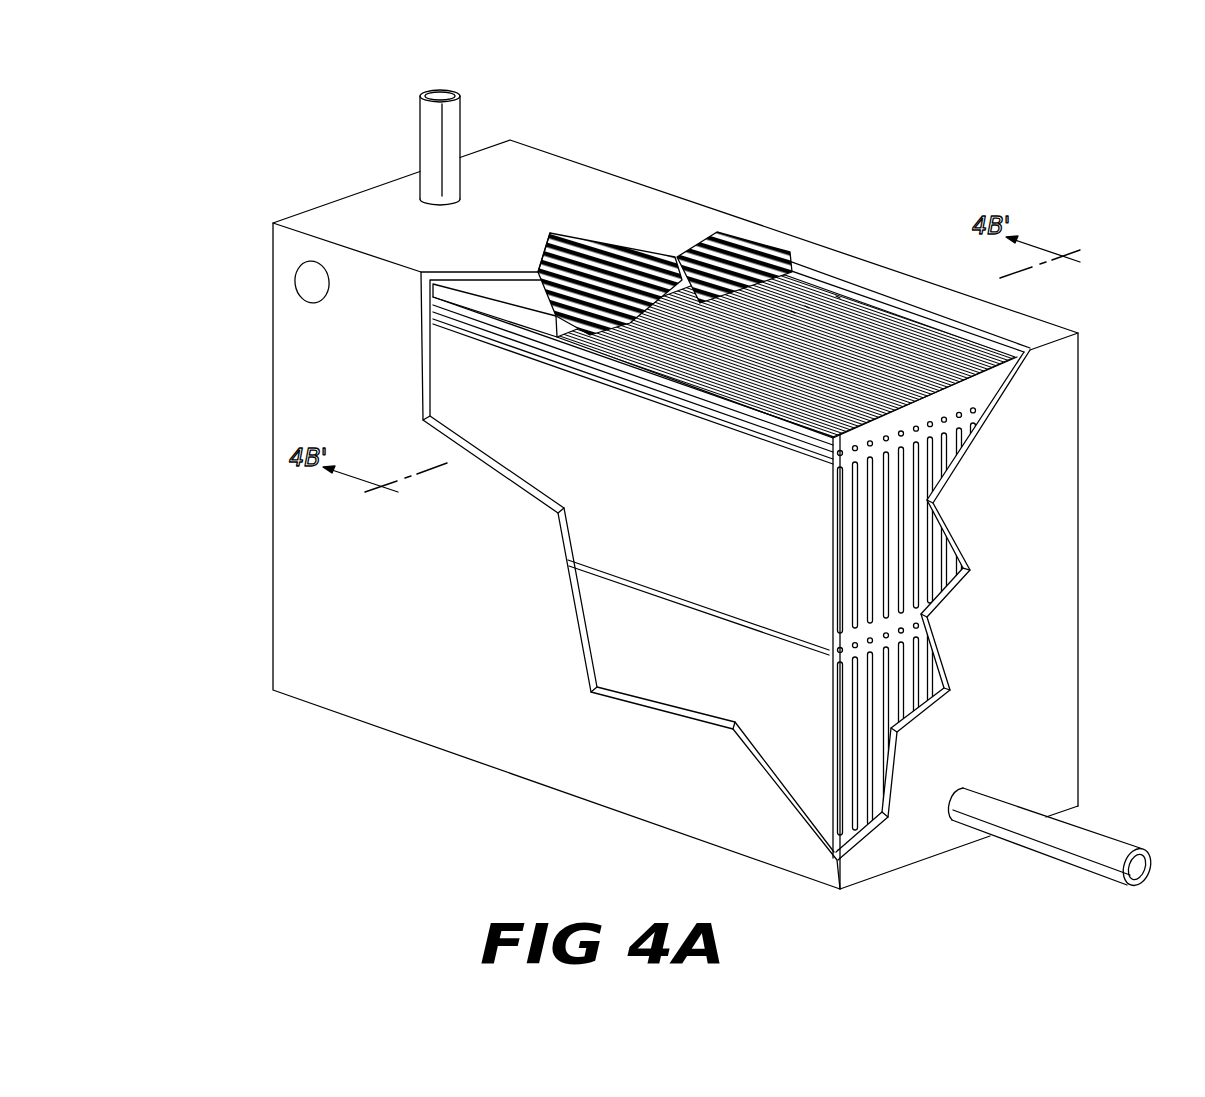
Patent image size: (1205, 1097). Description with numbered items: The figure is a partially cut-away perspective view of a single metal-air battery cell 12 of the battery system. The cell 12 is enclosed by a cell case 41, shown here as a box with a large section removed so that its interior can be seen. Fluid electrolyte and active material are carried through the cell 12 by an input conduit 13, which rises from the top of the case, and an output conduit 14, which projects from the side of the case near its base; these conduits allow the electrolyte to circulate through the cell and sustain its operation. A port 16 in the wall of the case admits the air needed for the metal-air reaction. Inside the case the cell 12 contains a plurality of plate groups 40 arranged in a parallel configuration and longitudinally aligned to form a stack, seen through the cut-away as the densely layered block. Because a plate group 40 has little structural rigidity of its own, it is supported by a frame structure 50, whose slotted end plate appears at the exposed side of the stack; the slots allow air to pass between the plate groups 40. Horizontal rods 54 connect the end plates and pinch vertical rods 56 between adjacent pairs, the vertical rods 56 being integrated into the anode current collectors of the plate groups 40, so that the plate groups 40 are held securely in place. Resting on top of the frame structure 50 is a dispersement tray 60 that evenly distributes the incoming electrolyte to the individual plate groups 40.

The battery cell 12 is at (862, 224).
The input conduit 13 is at (452, 130).
The output conduit 14 is at (1087, 840).
The port 16 is at (298, 288).
The plate group 40 is at (933, 357).
The cell case 41 is at (462, 733).
The frame structure 50 is at (822, 511).
The horizontal rod 54 is at (743, 427).
The vertical rod 56 is at (793, 312).
The dispersement tray 60 is at (775, 250).